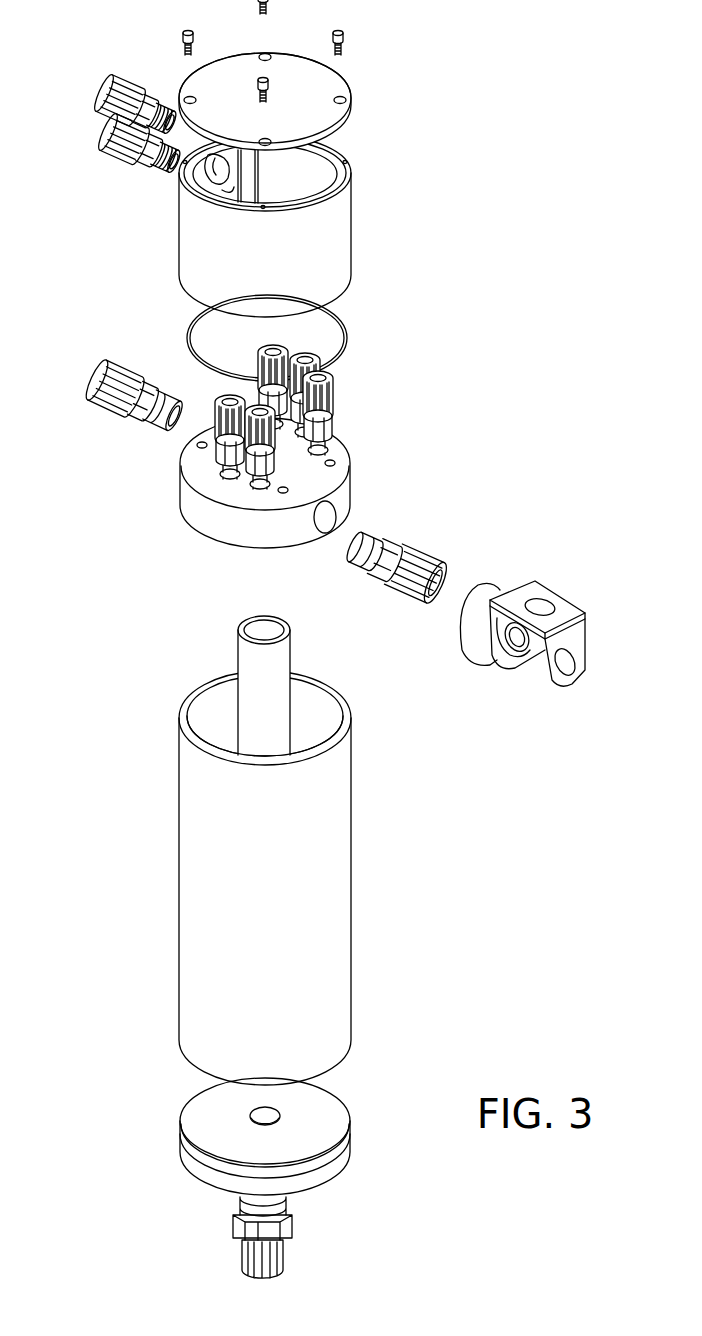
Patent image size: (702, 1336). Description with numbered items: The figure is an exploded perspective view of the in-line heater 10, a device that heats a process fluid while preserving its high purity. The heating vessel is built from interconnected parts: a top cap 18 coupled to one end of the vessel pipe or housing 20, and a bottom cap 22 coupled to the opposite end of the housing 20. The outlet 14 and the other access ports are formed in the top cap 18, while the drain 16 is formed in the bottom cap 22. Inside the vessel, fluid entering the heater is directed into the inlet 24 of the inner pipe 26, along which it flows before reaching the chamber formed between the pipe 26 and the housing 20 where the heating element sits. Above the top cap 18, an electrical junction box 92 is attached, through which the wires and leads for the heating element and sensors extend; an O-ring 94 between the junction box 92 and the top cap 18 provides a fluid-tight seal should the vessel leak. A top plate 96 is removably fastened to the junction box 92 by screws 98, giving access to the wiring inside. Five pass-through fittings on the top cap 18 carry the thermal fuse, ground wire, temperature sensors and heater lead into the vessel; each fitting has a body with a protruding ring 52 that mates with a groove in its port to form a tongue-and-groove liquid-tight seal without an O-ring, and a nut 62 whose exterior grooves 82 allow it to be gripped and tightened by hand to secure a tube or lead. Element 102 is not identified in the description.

The in-line heater 10 is at (478, 352).
The outlet 14 is at (325, 520).
The drain 16 is at (250, 1110).
The top cap 18 is at (197, 520).
The housing 20 is at (188, 883).
The bottom cap 22 is at (190, 1162).
The inlet of pipe 24 is at (258, 627).
The pipe 26 is at (247, 657).
The ring 52 is at (164, 411).
The nut 62 is at (127, 363).
The grooves 82 is at (95, 360).
The electrical junction box 92 is at (360, 223).
The O-ring 94 is at (343, 324).
The top plate 96 is at (293, 65).
The screws 98 is at (187, 33).
The connector stem 102 is at (272, 483).